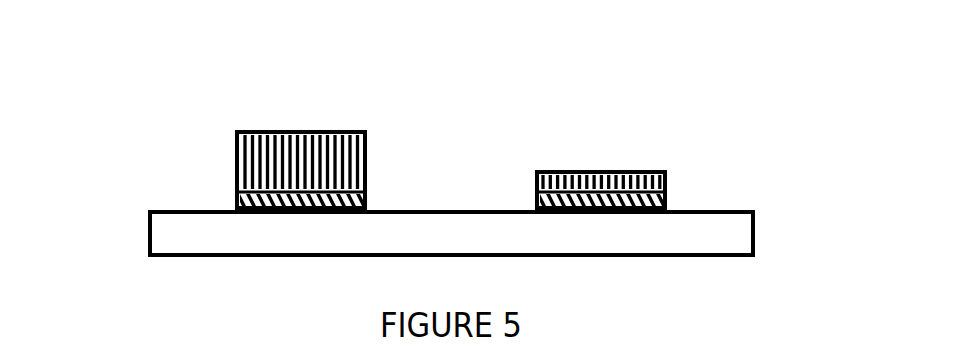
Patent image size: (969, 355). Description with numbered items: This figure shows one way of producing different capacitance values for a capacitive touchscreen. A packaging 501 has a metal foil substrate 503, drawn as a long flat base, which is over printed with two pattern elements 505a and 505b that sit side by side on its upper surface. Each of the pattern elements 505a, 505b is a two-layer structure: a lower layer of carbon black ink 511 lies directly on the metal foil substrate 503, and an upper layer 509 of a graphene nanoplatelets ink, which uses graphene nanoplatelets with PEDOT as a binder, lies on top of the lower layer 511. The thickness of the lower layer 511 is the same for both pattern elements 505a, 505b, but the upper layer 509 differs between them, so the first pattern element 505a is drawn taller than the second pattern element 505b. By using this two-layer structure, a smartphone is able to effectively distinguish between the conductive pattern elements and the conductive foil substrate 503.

The packaging 501 is at (132, 121).
The metal foil substrate 503 is at (209, 234).
The pattern element 505a is at (338, 152).
The pattern element 505b is at (685, 135).
The upper layer 509 is at (669, 181).
The lower layer of carbon black ink 511 is at (668, 200).